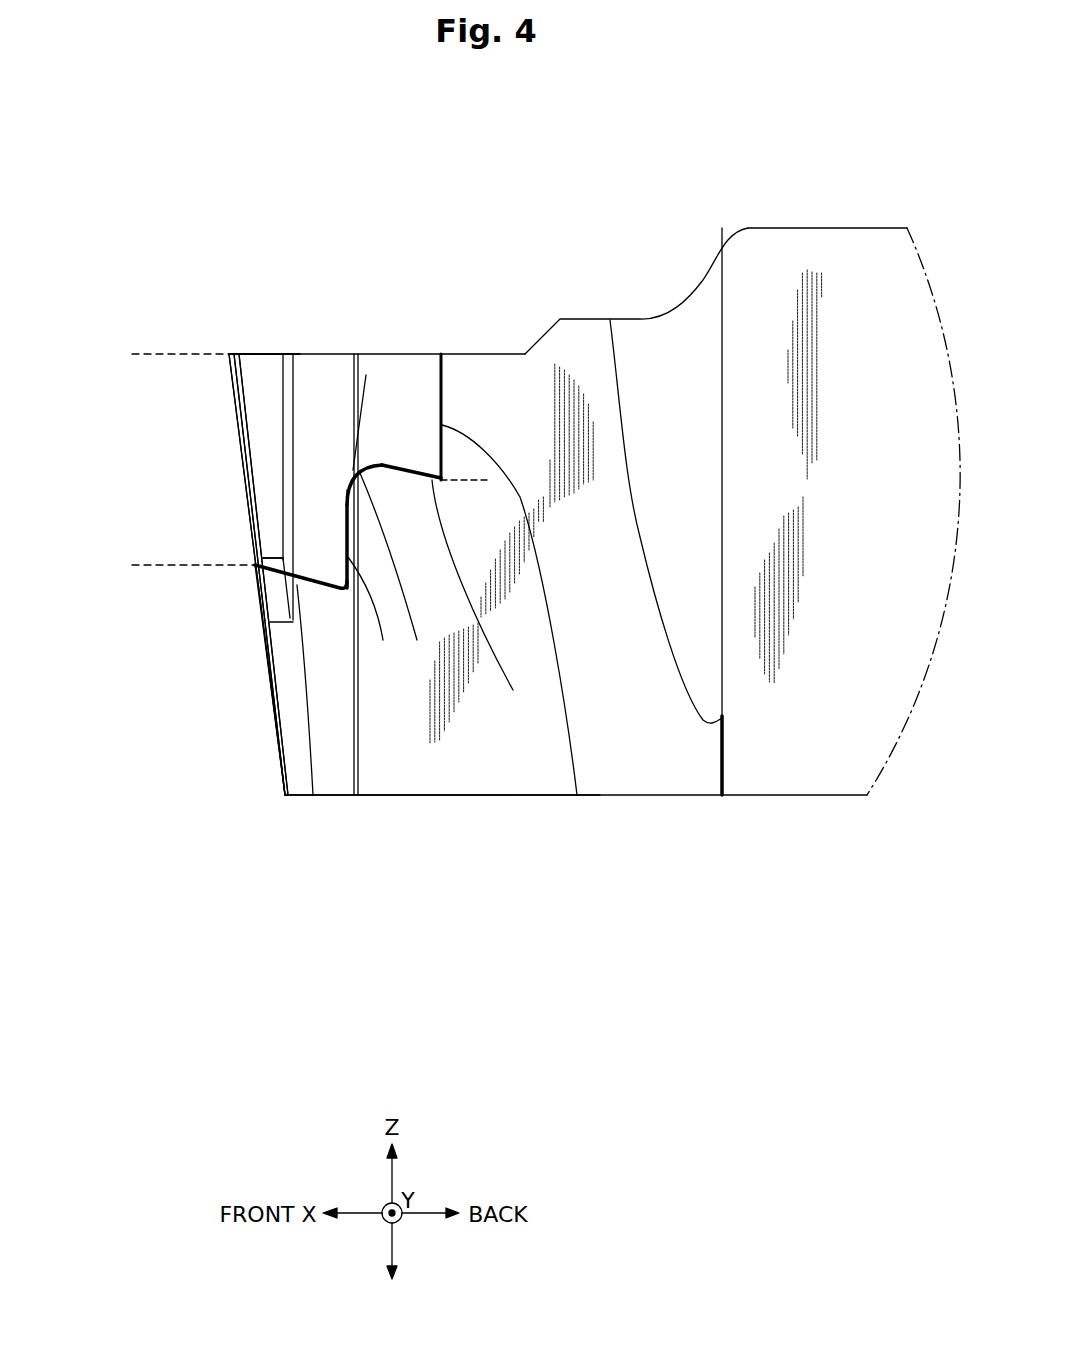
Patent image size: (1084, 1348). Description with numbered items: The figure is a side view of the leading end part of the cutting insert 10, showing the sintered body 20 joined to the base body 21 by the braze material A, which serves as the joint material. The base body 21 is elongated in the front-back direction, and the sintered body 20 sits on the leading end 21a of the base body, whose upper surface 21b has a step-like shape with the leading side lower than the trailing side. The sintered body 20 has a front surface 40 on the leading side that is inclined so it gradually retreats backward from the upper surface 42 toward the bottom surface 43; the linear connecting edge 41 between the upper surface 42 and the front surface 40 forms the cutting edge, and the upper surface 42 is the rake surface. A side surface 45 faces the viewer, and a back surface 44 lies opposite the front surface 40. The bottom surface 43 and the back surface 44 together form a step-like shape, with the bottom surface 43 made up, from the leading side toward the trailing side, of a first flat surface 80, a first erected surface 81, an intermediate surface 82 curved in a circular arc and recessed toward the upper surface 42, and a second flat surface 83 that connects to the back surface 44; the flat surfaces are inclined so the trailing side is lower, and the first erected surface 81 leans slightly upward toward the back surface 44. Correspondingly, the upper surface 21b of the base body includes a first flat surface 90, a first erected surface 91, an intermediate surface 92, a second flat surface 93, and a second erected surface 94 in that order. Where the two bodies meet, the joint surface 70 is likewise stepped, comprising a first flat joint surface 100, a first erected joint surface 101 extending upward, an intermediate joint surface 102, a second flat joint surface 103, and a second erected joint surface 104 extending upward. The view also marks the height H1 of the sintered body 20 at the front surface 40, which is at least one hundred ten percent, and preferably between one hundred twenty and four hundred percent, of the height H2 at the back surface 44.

The cutting insert 10 is at (790, 220).
The sintered body 20 is at (307, 342).
The base body 21 is at (591, 314).
The leading end 21a is at (458, 770).
The upper surface 21b is at (392, 452).
The front surface 40 is at (237, 443).
The connecting edge 41 is at (229, 354).
The upper surface 42 is at (366, 354).
The bottom surface 43 is at (324, 605).
The back surface 44 is at (577, 795).
The side surface 45 is at (290, 484).
The joint surface 70 is at (283, 510).
The first flat surface 80 is at (280, 587).
The first erected surface 81 is at (348, 530).
The intermediate surface 82 is at (383, 470).
The second flat surface 83 is at (442, 427).
The first flat surface 90 is at (270, 560).
The first erected surface 91 is at (338, 507).
The intermediate surface 92 is at (342, 484).
The second flat surface 93 is at (442, 387).
The second erected surface 94 is at (513, 690).
The first flat joint surface 100 is at (293, 620).
The first erected joint surface 101 is at (417, 640).
The intermediate joint surface 102 is at (366, 375).
The second flat joint surface 103 is at (442, 397).
The second erected joint surface 104 is at (442, 415).
The braze material A is at (290, 586).
The height H1 is at (174, 366).
The height H2 is at (473, 368).